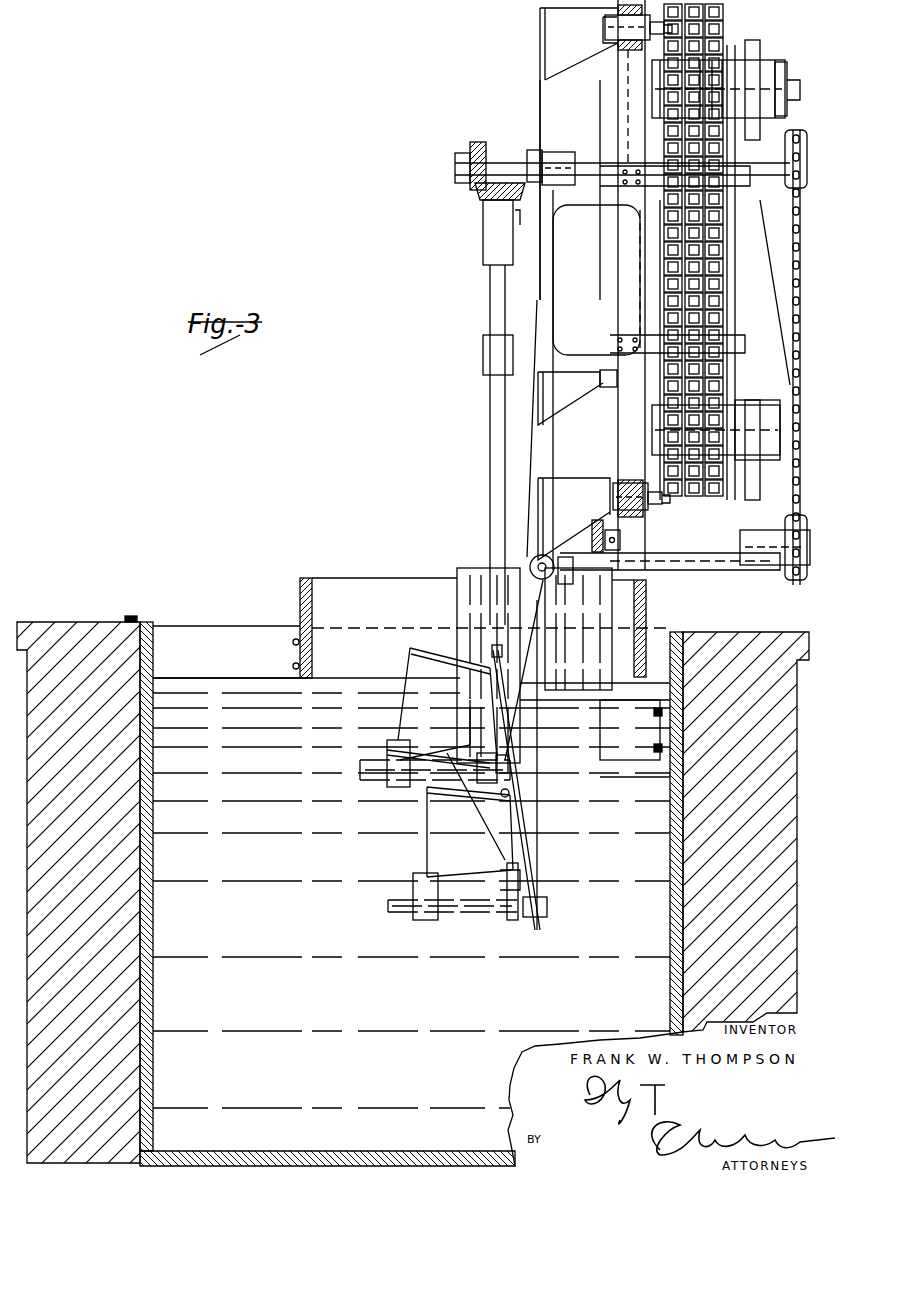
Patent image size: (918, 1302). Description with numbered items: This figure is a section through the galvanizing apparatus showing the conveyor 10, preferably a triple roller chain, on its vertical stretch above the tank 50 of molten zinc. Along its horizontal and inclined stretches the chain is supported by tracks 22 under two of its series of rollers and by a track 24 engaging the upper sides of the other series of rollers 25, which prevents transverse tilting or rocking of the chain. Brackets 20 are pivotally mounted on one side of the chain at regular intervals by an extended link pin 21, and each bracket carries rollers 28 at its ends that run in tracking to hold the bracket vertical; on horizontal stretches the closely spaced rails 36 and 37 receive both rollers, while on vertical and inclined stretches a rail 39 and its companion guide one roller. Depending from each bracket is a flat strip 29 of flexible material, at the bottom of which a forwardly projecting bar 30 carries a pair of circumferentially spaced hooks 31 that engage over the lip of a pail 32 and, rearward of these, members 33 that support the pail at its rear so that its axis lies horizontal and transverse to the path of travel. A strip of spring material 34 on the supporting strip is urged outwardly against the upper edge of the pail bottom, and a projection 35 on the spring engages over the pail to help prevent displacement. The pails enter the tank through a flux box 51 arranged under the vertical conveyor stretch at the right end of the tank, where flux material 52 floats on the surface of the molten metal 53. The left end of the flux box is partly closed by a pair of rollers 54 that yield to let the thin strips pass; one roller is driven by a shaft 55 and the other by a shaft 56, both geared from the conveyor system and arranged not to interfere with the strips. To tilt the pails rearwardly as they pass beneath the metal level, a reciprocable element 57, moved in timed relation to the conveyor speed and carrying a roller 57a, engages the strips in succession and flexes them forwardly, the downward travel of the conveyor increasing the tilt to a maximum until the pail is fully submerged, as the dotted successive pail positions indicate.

The conveyor 10 is at (678, 228).
The brackets 20 is at (573, 52).
The extended link pin 21 is at (665, 32).
The tracks 22 is at (672, 40).
The track 24 is at (712, 33).
The rollers 25 is at (785, 26).
The rollers 28 is at (632, 42).
The flat strips 29 is at (540, 130).
The forwardly projecting bars 30 is at (380, 782).
The hooks 31 is at (385, 752).
The pail 32 is at (432, 680).
The members 33 is at (512, 766).
The strip of spring material 34 is at (530, 828).
The projection 35 is at (492, 660).
The rail 36 is at (636, 42).
The rail 37 is at (606, 20).
The rail 39 is at (622, 313).
The tank 50 is at (148, 628).
The flux box 51 is at (305, 578).
The flux material 52 is at (337, 670).
The molten metal 53 is at (246, 680).
The rollers 54 is at (470, 578).
The shaft 55 is at (490, 438).
The shaft 56 is at (738, 538).
The element 57 is at (566, 556).
The roller 57a is at (530, 562).